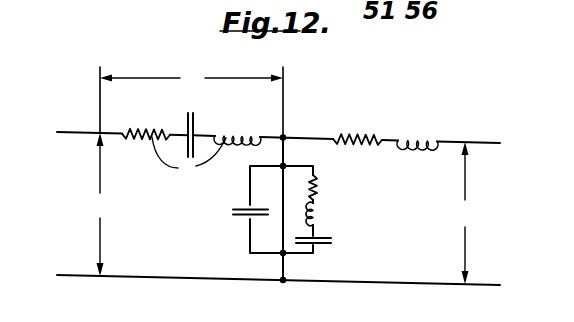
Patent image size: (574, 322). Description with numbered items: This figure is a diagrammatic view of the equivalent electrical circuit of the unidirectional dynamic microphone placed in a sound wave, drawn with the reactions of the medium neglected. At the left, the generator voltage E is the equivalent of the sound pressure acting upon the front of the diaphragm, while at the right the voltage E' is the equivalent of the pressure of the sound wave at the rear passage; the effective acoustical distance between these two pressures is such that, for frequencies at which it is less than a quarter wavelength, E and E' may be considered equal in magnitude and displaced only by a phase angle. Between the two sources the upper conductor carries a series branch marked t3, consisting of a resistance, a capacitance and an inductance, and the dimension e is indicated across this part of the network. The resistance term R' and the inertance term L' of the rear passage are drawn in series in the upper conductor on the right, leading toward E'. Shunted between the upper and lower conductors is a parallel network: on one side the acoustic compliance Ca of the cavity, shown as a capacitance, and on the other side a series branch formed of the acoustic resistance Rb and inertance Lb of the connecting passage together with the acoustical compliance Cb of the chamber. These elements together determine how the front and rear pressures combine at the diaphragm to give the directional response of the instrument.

The voltage across series impedance e is at (191, 80).
The equivalent of sound pressure upon the front of the diaphragm E is at (92, 204).
The equivalent of the pressure of the sound wave at the passage E' is at (454, 213).
The resistance term of the passage R' is at (357, 122).
The inertance term of the passage L' is at (417, 125).
The series resonant circuit t3 is at (189, 168).
The acoustic compliance of the cavity Ca is at (240, 208).
The acoustic resistance of the passage Rb is at (320, 190).
The acoustic inertance of the passage Lb is at (318, 214).
The acoustical compliance of the chamber Cb is at (322, 247).